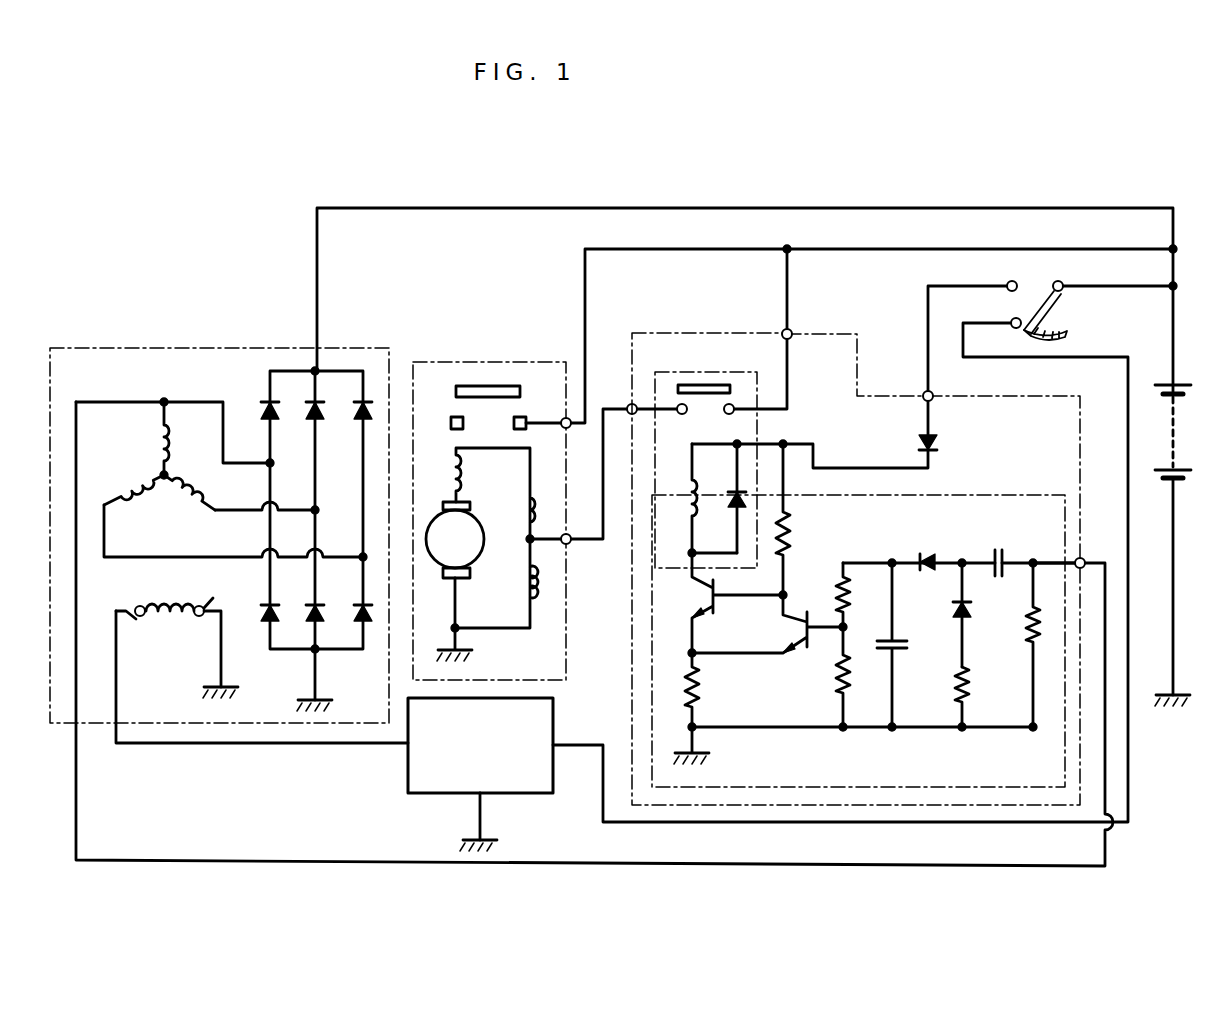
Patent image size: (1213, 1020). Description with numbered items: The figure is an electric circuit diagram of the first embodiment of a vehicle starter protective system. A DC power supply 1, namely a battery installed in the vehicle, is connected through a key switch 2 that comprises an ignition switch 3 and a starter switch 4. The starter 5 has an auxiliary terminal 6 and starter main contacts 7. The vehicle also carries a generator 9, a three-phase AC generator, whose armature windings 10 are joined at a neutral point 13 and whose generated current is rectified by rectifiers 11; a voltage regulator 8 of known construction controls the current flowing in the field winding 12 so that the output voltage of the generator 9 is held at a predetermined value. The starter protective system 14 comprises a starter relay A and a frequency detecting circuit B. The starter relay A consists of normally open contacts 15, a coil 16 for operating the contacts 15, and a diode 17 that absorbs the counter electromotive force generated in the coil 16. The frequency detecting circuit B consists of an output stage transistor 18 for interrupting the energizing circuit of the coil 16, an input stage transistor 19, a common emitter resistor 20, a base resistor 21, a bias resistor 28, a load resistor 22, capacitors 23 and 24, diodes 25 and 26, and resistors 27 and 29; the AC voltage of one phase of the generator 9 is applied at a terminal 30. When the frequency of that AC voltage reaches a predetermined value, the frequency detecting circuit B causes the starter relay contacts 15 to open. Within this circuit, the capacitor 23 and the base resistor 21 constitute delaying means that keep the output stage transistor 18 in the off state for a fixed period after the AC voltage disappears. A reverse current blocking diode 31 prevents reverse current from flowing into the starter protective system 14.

The DC power supply 1 is at (1183, 432).
The key switch 2 is at (1066, 308).
The ignition switch 3 is at (1012, 318).
The starter switch 4 is at (1006, 283).
The starter 5 is at (460, 361).
The auxiliary terminal 6 is at (568, 543).
The starter main contacts 7 is at (527, 390).
The voltage regulator 8 is at (406, 774).
The generator 9 is at (102, 346).
The armature windings 10 is at (144, 441).
The rectifiers 11 is at (266, 390).
The field winding 12 is at (169, 620).
The neutral point 13 is at (158, 474).
The starter protective system 14 is at (800, 333).
The normally open contacts 15 is at (723, 384).
The coil 16 is at (686, 478).
The diode 17 is at (728, 480).
The output stage transistor 18 is at (685, 590).
The input stage transistor 19 is at (785, 627).
The common emitter resistor 20 is at (707, 690).
The base resistor 21 is at (838, 590).
The load resistor 22 is at (797, 530).
The capacitor 23 is at (908, 651).
The capacitor 24 is at (1000, 550).
The diode 25 is at (929, 553).
The diode 26 is at (951, 607).
The resistor 27 is at (955, 692).
The bias resistor 28 is at (832, 690).
The resistor 29 is at (1022, 626).
The terminal 30 is at (1087, 555).
The reverse current blocking diode 31 is at (943, 445).
The starter relay A is at (688, 372).
The frequency detecting circuit B is at (1020, 494).